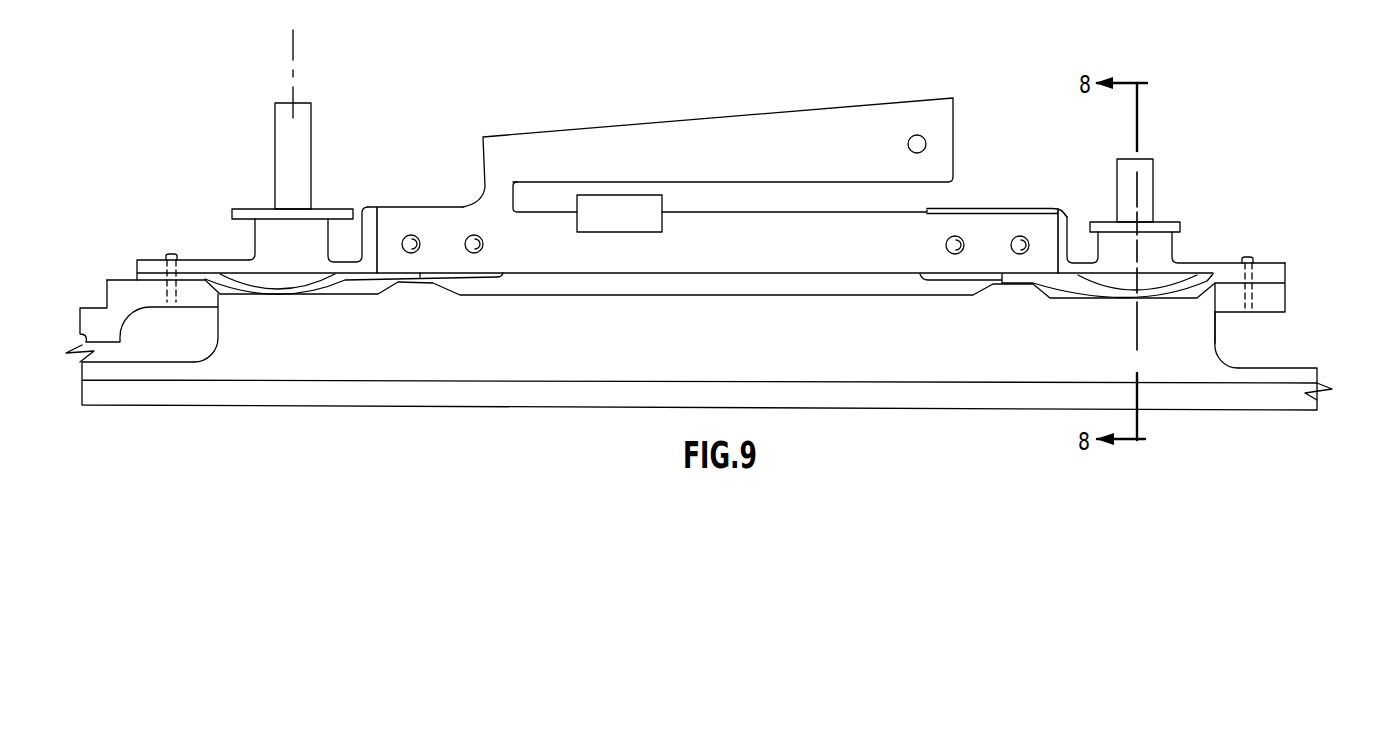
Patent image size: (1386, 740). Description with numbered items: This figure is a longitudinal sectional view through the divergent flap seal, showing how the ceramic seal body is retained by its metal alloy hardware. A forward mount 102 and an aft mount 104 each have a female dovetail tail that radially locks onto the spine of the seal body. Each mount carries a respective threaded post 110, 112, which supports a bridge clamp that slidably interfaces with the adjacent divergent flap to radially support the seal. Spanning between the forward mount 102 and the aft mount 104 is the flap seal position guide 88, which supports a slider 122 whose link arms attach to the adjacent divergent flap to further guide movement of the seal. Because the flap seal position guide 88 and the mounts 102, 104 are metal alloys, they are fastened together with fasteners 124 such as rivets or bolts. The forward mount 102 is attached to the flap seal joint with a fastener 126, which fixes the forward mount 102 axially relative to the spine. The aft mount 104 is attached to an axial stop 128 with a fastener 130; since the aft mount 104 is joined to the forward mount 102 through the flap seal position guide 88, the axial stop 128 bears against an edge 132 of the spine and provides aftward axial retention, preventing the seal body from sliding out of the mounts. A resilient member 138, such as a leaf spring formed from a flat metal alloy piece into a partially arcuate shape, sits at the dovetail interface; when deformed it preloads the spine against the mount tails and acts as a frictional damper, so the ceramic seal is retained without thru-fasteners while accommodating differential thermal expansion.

The flap seal position guide 88 is at (765, 120).
The forward mount 102 is at (364, 145).
The aft mount 104 is at (1107, 147).
The threaded post 110 is at (313, 117).
The threaded post 112 is at (1155, 178).
The slider 122 is at (615, 195).
The fasteners 124 is at (473, 235).
The fastener 126 is at (172, 256).
The axial stop 128 is at (1287, 303).
The fastener 130 is at (1248, 260).
The edge 132 is at (1217, 333).
The resilient member 138 is at (304, 289).